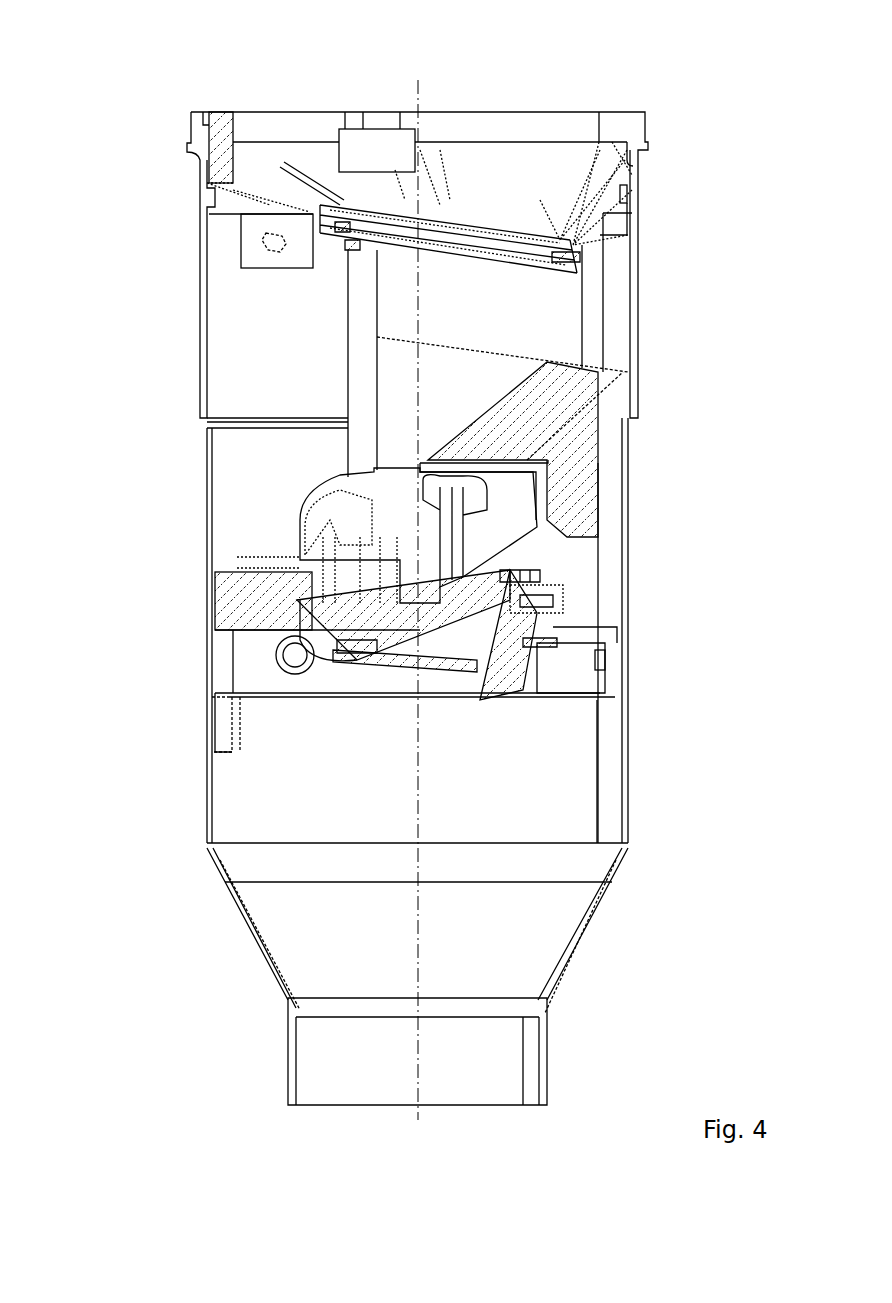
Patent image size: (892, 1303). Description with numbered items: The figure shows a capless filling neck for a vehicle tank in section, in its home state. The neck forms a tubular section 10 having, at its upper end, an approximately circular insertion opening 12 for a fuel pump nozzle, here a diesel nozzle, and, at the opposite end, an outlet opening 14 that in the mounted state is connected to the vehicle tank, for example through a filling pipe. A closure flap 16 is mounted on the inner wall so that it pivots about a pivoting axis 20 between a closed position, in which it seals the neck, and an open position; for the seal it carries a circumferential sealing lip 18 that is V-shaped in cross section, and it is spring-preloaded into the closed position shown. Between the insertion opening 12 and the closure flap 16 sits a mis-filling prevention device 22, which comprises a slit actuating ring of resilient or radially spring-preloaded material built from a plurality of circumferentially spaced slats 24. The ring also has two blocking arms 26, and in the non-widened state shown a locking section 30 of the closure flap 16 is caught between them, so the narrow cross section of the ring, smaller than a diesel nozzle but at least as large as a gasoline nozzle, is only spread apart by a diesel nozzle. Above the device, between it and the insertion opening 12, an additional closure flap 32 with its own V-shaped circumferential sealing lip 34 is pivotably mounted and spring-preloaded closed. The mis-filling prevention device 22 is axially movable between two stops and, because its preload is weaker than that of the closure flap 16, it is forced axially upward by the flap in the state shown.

The tubular section 10 is at (550, 330).
The insertion opening 12 is at (598, 128).
The outlet opening 14 is at (295, 1082).
The closure flap 16 is at (327, 663).
The sealing lip 18 is at (562, 633).
The pivoting axis 20 is at (297, 655).
The mis-filling prevention device 22 is at (505, 552).
The slats 24 is at (403, 540).
The blocking arms 26 is at (553, 605).
The locking section 30 is at (533, 577).
The additional closure flap 32 is at (502, 240).
The sealing lip 34 is at (565, 257).